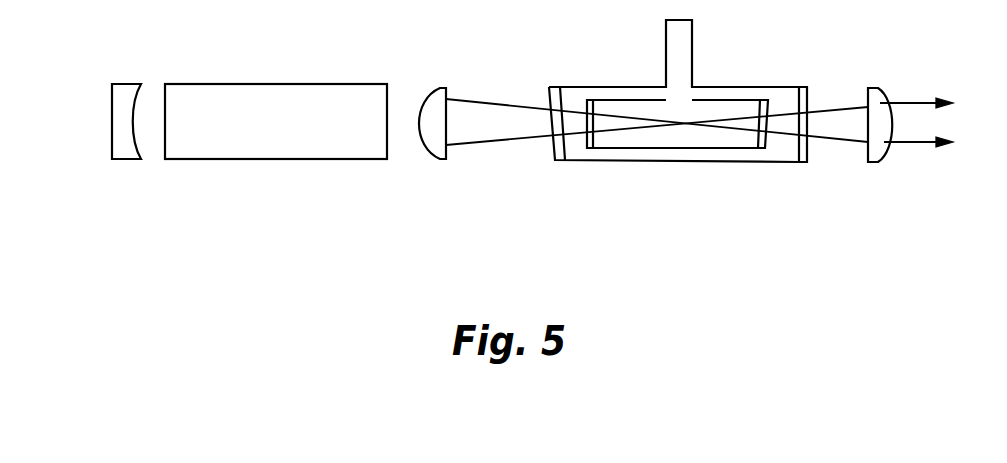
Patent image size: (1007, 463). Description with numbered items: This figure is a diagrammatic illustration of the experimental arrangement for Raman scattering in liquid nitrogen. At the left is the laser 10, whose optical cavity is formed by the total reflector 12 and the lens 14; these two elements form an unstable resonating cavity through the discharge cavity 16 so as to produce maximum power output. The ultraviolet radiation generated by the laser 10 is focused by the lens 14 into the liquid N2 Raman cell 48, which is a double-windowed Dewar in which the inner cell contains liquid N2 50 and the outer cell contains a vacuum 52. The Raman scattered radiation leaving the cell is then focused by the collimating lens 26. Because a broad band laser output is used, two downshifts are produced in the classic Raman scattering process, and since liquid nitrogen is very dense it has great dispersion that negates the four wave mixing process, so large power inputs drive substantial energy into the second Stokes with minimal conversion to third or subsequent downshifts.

The laser 10 is at (269, 150).
The total reflector 12 is at (112, 117).
The lens 14 is at (449, 105).
The discharge cavity 16 is at (254, 144).
The collimating lens 26 is at (870, 163).
The liquid N2 Raman cell 48 is at (671, 162).
The liquid N2 50 is at (675, 132).
The vacuum 52 is at (575, 147).